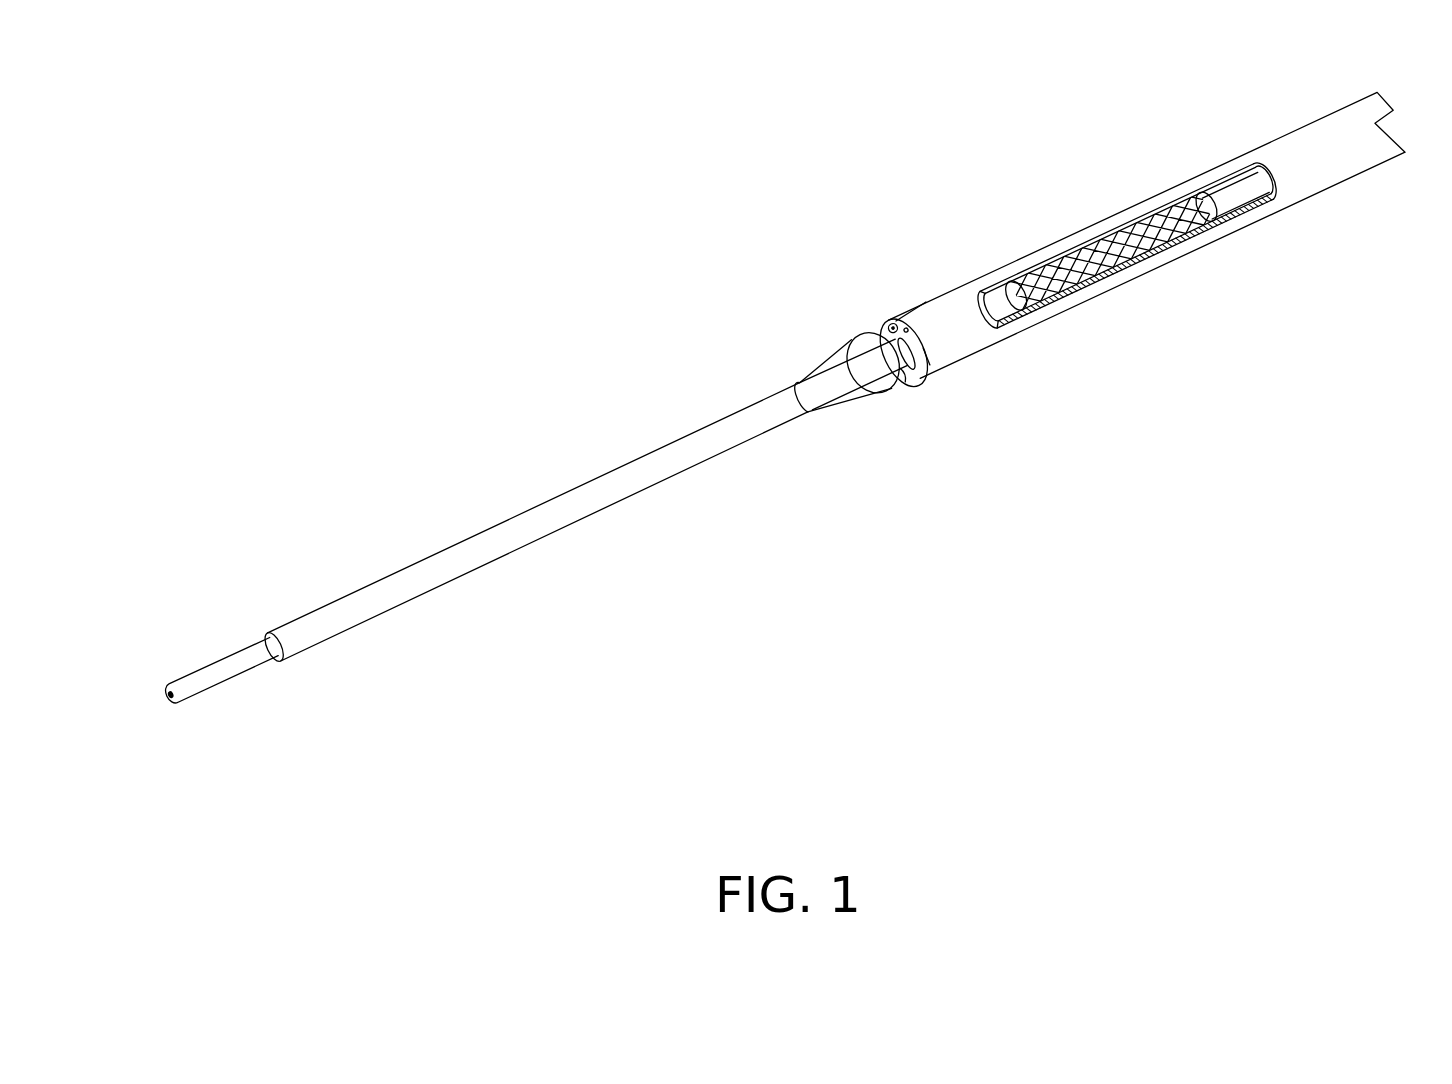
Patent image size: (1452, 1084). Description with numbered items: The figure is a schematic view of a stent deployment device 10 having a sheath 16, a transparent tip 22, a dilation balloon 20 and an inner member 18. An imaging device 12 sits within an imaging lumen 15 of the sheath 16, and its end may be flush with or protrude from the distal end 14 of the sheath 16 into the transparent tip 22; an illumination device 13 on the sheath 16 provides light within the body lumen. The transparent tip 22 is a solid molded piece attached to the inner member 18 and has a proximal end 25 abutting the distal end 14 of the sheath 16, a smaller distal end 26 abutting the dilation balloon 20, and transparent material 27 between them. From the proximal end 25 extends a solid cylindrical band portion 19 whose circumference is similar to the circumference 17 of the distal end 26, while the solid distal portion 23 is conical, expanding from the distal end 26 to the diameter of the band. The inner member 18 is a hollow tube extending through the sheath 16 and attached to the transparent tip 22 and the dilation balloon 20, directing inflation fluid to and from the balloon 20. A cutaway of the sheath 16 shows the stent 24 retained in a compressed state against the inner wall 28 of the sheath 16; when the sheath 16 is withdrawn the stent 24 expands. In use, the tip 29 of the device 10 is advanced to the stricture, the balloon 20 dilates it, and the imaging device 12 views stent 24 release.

The deployment device 10 is at (831, 226).
The imaging device 12 is at (893, 322).
The illumination device 13 is at (907, 326).
The distal end 14 is at (913, 378).
The lumen 15 is at (888, 322).
The sheath 16 is at (967, 303).
The circumference 17 is at (930, 357).
The inner member 18 is at (815, 386).
The cylindrical band portion 19 is at (898, 378).
The dilation balloon 20 is at (478, 529).
The transparent tip 22 is at (843, 352).
The solid distal portion 23 is at (835, 350).
The stent 24 is at (1053, 257).
The proximal end 25 is at (920, 373).
The distal end 26 is at (808, 414).
The transparent material 27 is at (843, 398).
The inner wall 28 is at (1180, 198).
The tip 29 is at (229, 683).